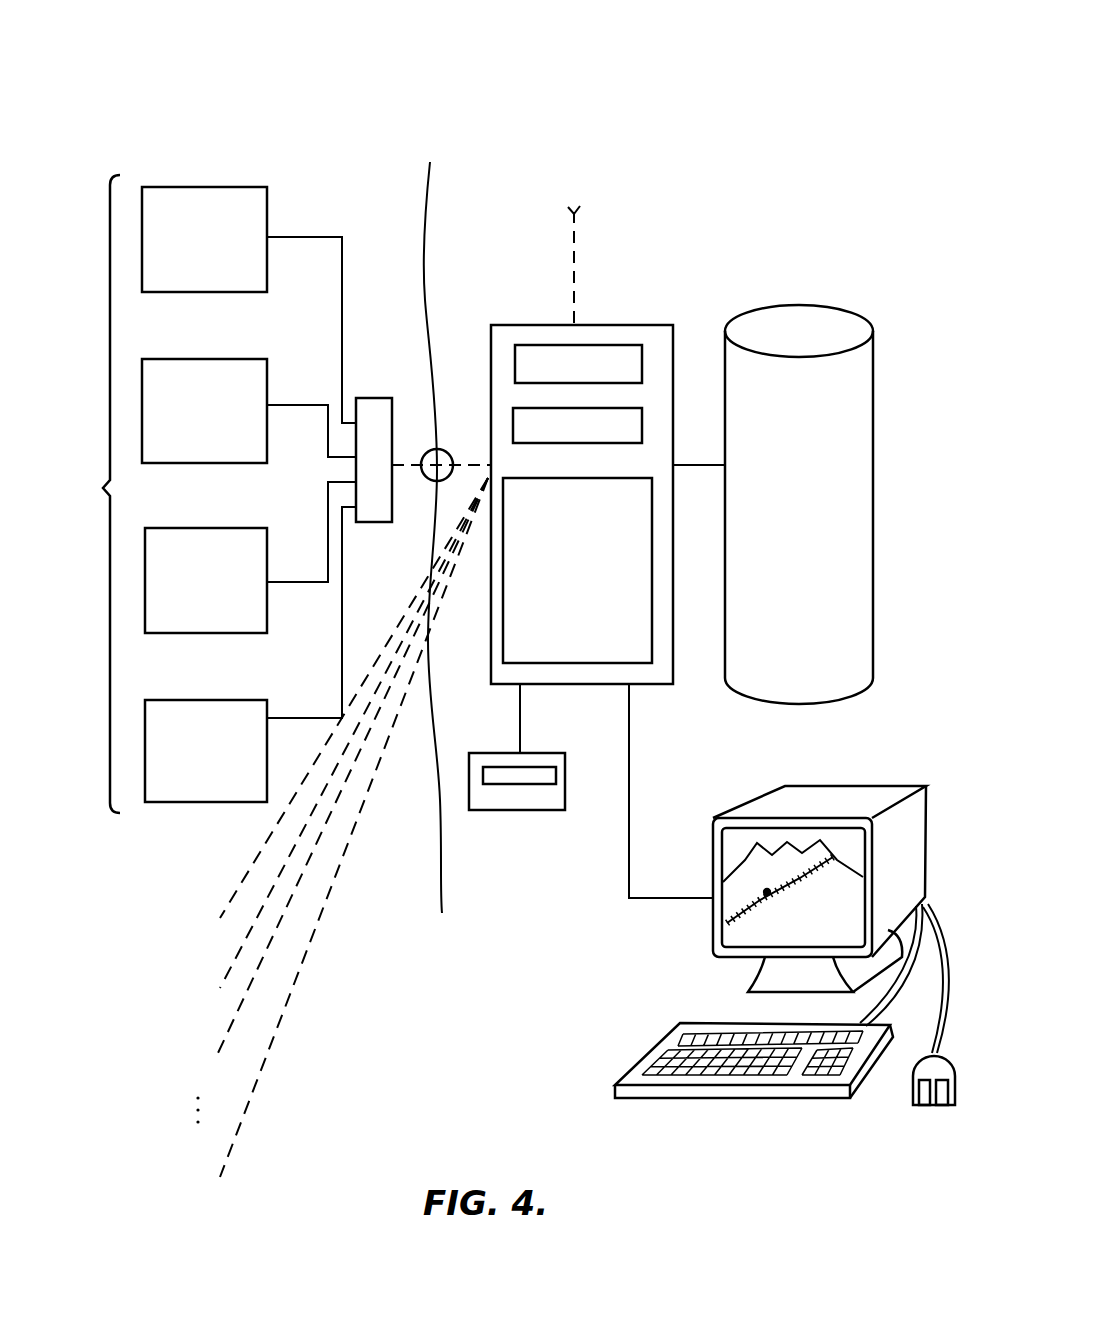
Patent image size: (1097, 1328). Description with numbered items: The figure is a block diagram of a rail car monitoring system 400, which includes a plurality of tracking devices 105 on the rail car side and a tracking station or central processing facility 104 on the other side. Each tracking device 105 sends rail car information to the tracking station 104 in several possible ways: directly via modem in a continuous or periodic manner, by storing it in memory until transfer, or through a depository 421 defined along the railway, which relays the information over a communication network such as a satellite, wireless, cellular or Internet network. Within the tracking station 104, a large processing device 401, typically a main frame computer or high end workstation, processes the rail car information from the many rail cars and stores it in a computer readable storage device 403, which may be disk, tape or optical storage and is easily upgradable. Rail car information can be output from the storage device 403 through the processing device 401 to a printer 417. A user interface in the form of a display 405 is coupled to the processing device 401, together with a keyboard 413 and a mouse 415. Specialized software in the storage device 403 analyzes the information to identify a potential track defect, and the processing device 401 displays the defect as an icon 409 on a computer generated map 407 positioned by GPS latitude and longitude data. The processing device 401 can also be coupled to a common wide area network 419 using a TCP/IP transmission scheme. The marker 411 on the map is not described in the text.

The rail car monitoring system 400 is at (843, 33).
The tracking station 104 is at (842, 185).
The tracking devices 105 is at (363, 398).
The depository 421 is at (437, 449).
The wide area network 419 is at (574, 284).
The processing device 401 is at (620, 325).
The storage device 403 is at (845, 330).
The printer 417 is at (527, 800).
The display 405 is at (799, 865).
The computer generated map 407 is at (850, 897).
The icon 409 is at (735, 912).
The rail car position marker 411 is at (770, 896).
The keyboard 413 is at (790, 1090).
The mouse 415 is at (917, 1104).